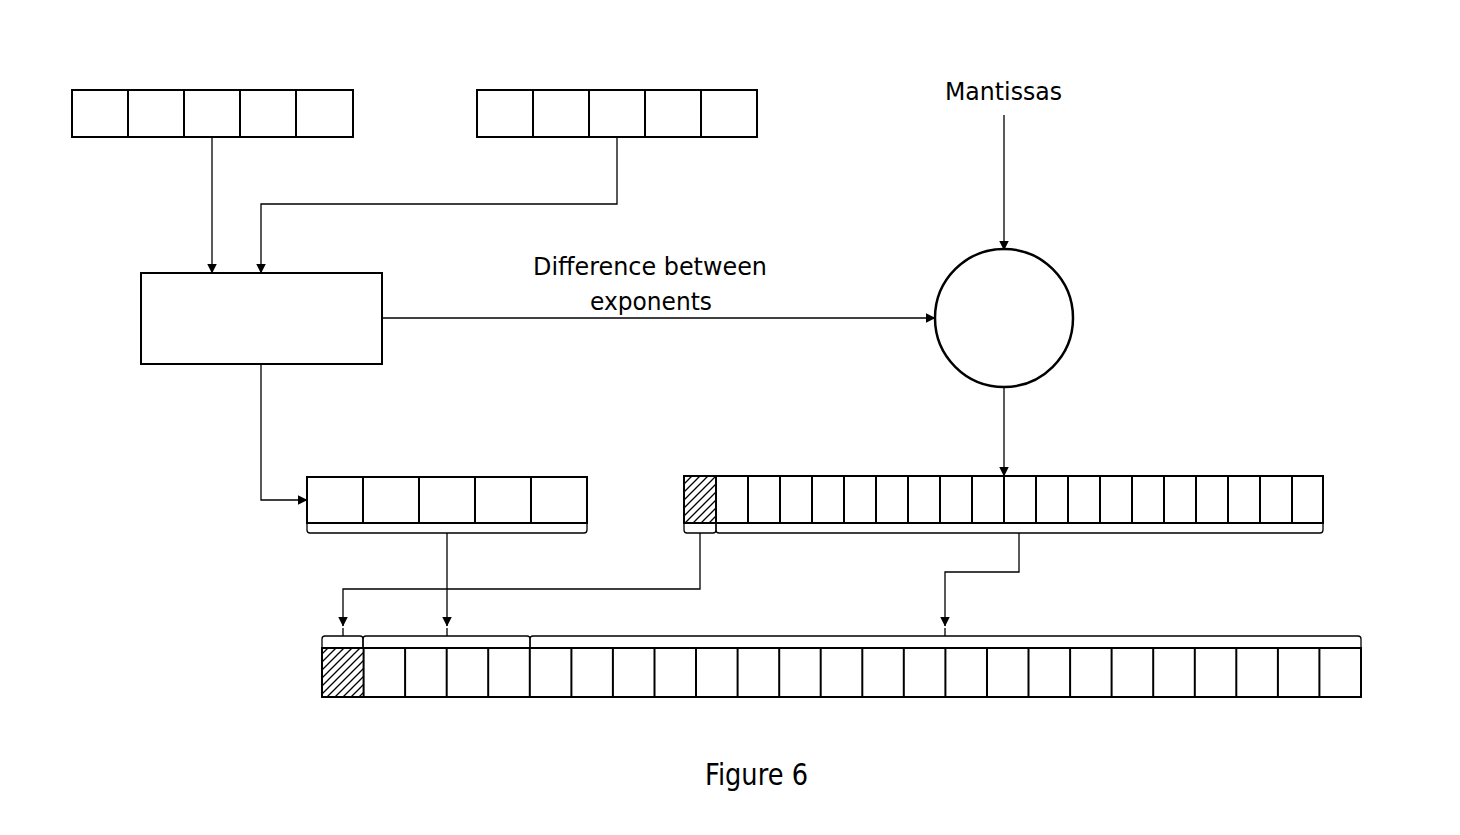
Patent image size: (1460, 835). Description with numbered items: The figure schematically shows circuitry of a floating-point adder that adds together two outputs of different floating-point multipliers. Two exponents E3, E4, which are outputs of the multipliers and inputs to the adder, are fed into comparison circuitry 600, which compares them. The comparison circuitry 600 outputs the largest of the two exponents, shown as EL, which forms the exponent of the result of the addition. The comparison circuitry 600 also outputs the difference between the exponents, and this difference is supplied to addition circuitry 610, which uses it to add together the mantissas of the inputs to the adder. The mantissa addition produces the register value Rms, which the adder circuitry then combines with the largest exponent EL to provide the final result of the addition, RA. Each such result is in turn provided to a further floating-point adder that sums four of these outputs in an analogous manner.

The comparison circuitry 600 is at (213, 364).
The addition circuitry 610 is at (1073, 318).
The exponent E3 is at (212, 90).
The exponent E4 is at (617, 90).
The largest exponent EL is at (447, 477).
The mantissa sum Rms is at (1293, 476).
The addition result RA is at (1361, 673).